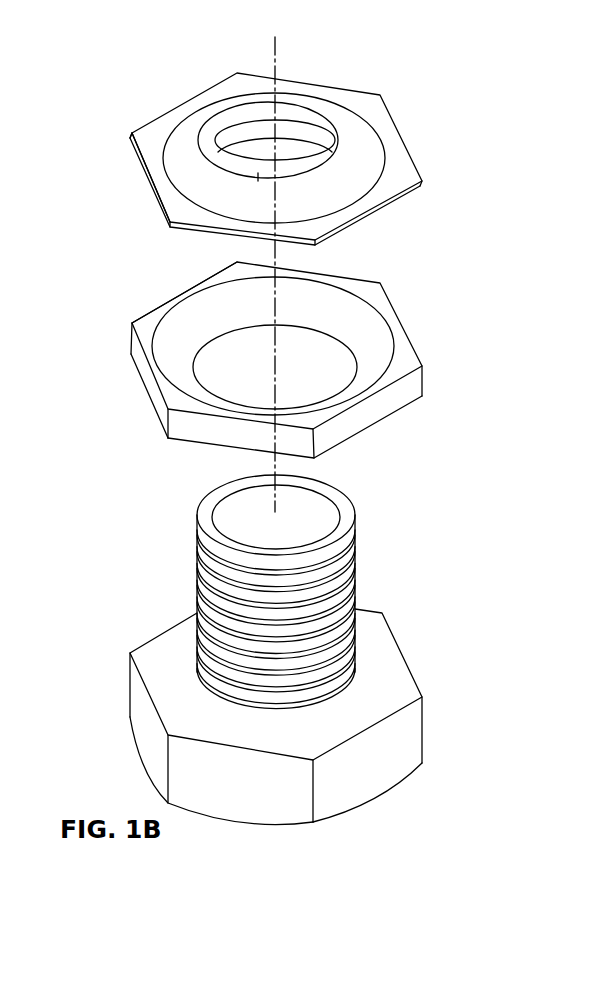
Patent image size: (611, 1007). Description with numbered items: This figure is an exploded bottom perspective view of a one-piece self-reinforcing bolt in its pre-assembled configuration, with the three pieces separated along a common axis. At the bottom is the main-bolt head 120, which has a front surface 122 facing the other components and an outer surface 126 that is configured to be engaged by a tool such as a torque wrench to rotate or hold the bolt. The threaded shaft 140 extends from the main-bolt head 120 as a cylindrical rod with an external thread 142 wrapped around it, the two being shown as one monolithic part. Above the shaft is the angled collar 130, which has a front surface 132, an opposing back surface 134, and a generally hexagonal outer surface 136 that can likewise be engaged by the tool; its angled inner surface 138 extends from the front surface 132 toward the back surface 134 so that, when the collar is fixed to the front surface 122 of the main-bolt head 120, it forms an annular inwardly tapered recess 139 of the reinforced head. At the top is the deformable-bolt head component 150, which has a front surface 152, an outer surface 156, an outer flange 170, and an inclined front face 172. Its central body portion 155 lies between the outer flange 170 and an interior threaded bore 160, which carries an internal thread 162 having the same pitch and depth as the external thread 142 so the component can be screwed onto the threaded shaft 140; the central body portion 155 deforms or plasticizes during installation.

The main-bolt head 120 is at (351, 717).
The front surface 122 is at (402, 707).
The outer surface 126 is at (266, 800).
The angled collar 130 is at (301, 357).
The front surface 132 is at (147, 332).
The back surface 134 is at (182, 438).
The outer surface 136 is at (150, 385).
The angled inner surface 138 is at (375, 347).
The annular inwardly tapered recess 139 is at (190, 290).
The threaded shaft 140 is at (336, 650).
The external thread 142 is at (342, 573).
The deformable-bolt head component 150 is at (296, 147).
The front surface 152 is at (328, 117).
The central body portion 155 is at (367, 178).
The outer surface 156 is at (345, 228).
The interior threaded bore 160 is at (305, 98).
The internal thread 162 is at (232, 147).
The outer flange 170 is at (153, 135).
The inclined front face 172 is at (190, 190).